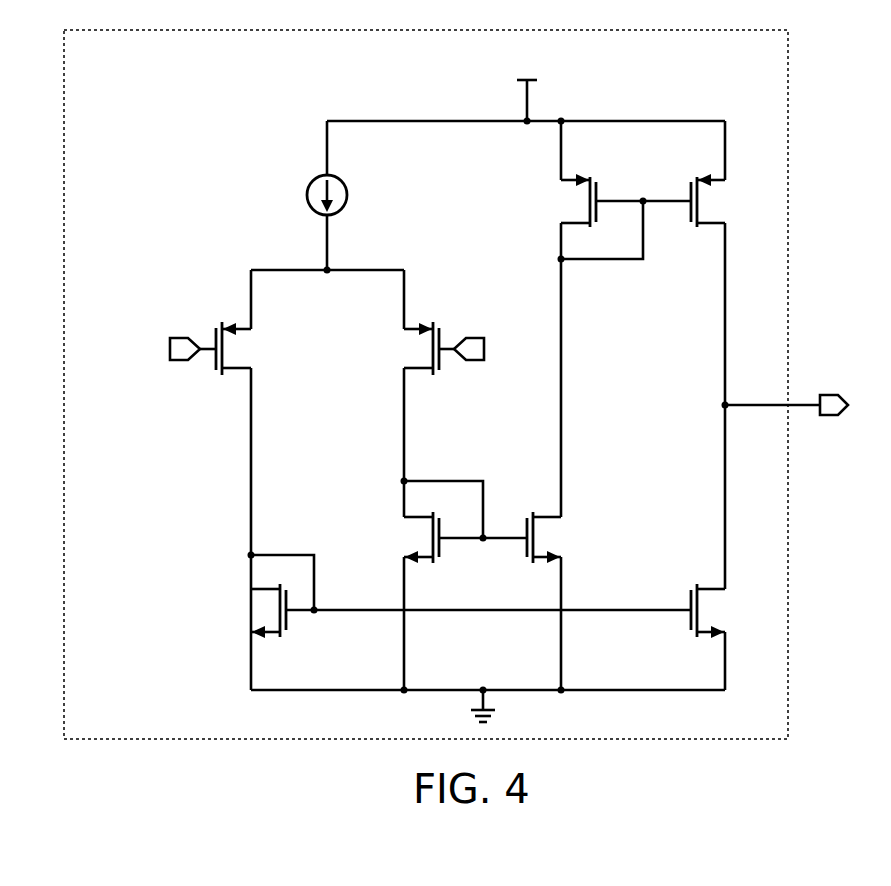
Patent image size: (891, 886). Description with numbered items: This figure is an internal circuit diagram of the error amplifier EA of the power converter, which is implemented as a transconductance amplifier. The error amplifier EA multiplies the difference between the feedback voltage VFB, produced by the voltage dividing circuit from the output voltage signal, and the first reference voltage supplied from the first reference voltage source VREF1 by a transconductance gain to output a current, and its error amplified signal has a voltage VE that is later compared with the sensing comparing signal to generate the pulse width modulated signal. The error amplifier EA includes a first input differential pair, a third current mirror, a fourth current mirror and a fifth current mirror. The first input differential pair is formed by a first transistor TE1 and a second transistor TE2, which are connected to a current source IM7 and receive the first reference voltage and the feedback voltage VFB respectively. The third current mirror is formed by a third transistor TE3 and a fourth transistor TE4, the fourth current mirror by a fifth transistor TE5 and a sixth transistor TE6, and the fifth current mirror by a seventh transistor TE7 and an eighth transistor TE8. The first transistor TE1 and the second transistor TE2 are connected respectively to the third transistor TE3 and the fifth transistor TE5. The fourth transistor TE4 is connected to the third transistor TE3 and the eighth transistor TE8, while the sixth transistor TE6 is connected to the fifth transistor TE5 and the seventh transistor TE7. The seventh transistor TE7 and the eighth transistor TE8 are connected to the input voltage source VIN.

The error amplifier EA is at (788, 70).
The input voltage source VIN is at (525, 84).
The current source IM7 is at (304, 195).
The first transistor TE1 is at (249, 348).
The second transistor TE2 is at (405, 348).
The third transistor TE3 is at (258, 629).
The fourth transistor TE4 is at (714, 629).
The fifth transistor TE5 is at (398, 537).
The sixth transistor TE6 is at (569, 537).
The seventh transistor TE7 is at (569, 186).
The eighth transistor TE8 is at (716, 186).
The first reference voltage source VREF1 is at (138, 351).
The feedback voltage VFB is at (498, 351).
The voltage of error amplified signal VE is at (803, 407).